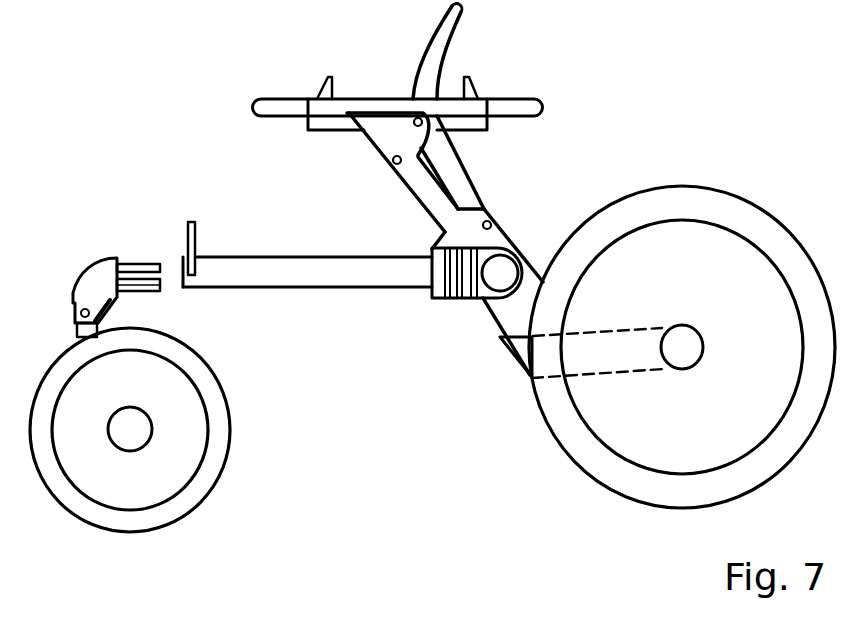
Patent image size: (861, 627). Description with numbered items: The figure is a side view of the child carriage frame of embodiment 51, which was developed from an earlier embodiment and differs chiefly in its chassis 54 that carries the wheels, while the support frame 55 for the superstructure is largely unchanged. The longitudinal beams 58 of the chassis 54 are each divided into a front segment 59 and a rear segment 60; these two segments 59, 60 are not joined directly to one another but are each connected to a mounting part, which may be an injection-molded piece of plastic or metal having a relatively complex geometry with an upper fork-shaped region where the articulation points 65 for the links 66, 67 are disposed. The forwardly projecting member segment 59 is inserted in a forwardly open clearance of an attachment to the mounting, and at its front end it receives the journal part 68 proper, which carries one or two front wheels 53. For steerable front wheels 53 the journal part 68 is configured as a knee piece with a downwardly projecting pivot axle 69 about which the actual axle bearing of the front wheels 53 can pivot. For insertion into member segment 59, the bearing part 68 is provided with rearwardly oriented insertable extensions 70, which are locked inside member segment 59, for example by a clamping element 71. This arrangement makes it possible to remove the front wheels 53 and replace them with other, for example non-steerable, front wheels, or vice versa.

The embodiment 51 is at (145, 90).
The front wheel 53 is at (188, 497).
The chassis 54 is at (257, 318).
The support frame 55 is at (268, 86).
The longitudinal beam 58 is at (333, 288).
The front segment 59 is at (400, 274).
The rear segment 60 is at (518, 351).
The articulation point 65 is at (492, 225).
The link 66 is at (456, 186).
The link 67 is at (421, 193).
The journal part 68 is at (72, 248).
The pivot axle 69 is at (80, 333).
The insertable extension 70 is at (138, 270).
The clamping element 71 is at (195, 248).